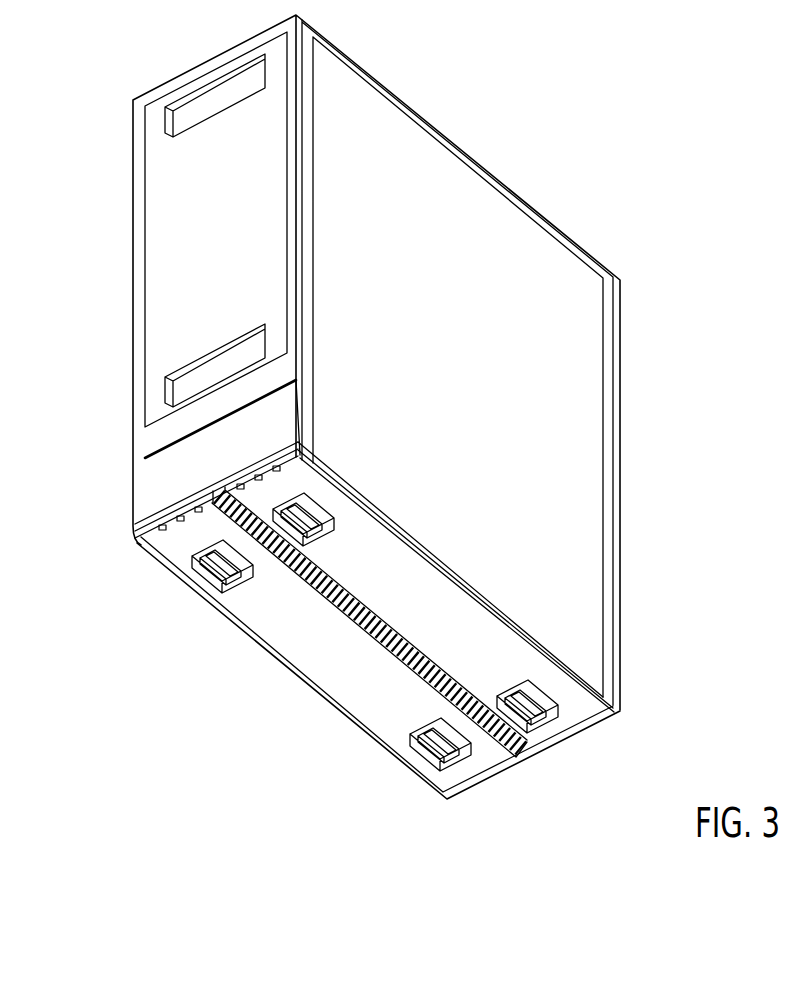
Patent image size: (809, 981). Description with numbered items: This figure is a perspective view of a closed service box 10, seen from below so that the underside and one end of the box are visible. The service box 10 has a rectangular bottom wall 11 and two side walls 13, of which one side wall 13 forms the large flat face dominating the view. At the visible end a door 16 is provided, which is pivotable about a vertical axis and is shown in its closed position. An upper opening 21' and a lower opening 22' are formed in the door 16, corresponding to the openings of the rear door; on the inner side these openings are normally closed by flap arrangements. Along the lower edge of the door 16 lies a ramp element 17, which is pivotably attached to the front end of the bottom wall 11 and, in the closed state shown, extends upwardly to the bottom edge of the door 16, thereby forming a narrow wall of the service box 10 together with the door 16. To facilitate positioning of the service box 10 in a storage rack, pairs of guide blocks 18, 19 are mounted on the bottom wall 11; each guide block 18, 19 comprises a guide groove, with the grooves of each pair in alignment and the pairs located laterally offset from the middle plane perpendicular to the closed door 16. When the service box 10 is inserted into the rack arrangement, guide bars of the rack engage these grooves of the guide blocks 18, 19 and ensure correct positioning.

The service box 10 is at (503, 139).
The bottom wall 11 is at (178, 550).
The side wall 13 is at (594, 330).
The door 16 is at (166, 198).
The ramp element 17 is at (157, 480).
The guide block 18 is at (222, 585).
The guide block 19 is at (300, 547).
The upper opening 21' is at (166, 100).
The lower opening 22' is at (166, 365).